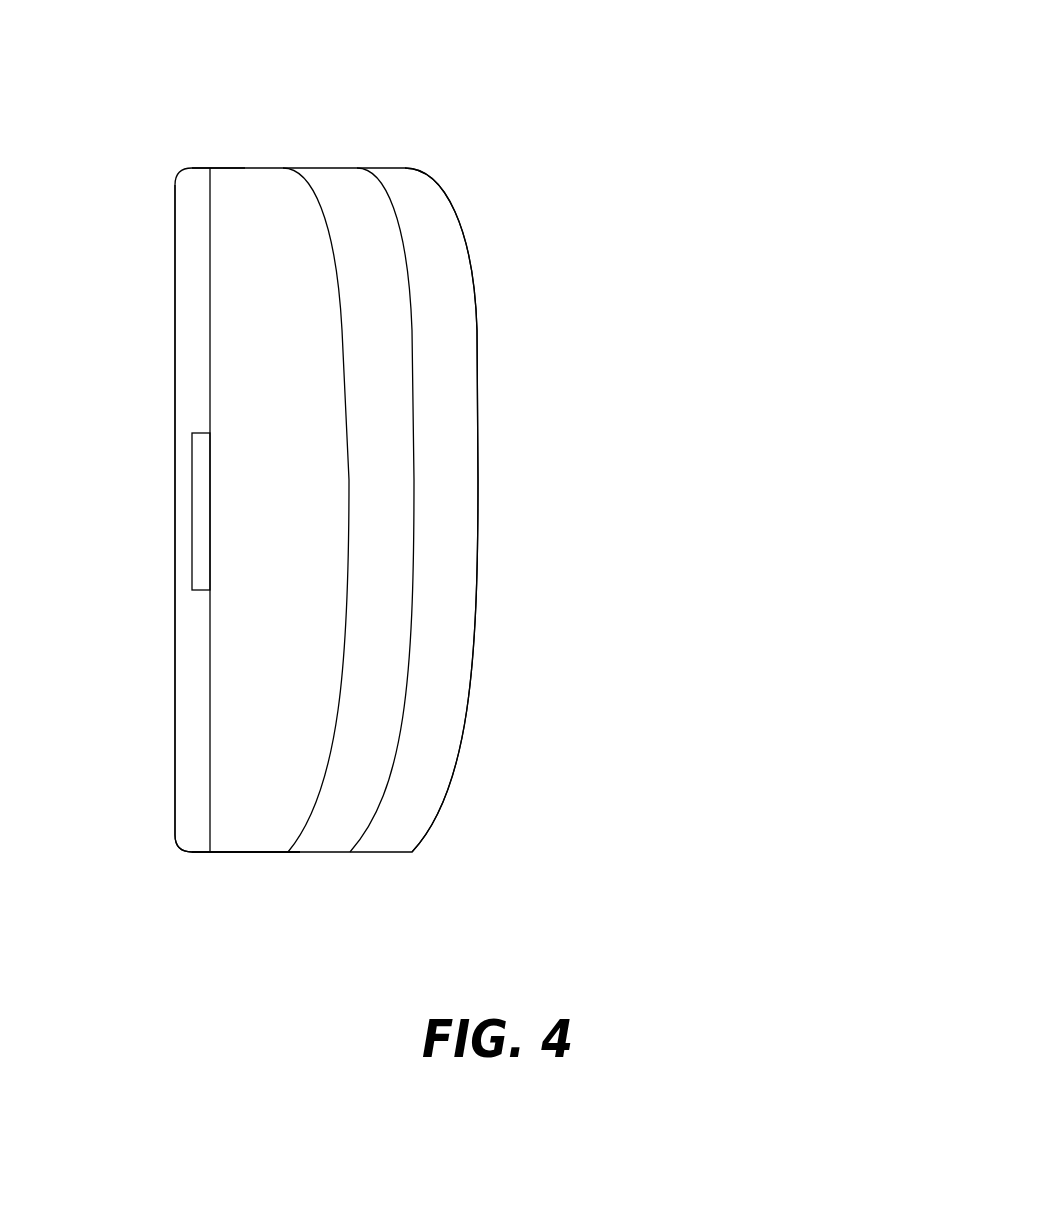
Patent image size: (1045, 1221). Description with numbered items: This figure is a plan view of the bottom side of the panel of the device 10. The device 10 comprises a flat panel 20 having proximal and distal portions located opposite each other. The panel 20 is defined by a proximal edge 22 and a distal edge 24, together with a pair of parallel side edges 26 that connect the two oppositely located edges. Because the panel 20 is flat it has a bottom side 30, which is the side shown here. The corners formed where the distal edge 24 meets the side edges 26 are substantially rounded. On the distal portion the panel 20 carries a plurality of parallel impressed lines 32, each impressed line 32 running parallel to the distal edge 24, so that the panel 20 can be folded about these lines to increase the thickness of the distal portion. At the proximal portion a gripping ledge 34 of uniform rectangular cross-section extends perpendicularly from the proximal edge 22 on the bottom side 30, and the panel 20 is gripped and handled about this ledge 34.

The device 10 is at (492, 463).
The flat panel 20 is at (457, 203).
The proximal edge 22 is at (177, 673).
The distal edge 24 is at (477, 400).
The side edges 26 is at (245, 168).
The bottom side 30 is at (320, 560).
The impressed lines 32 is at (410, 692).
The gripping ledge 34 is at (190, 258).